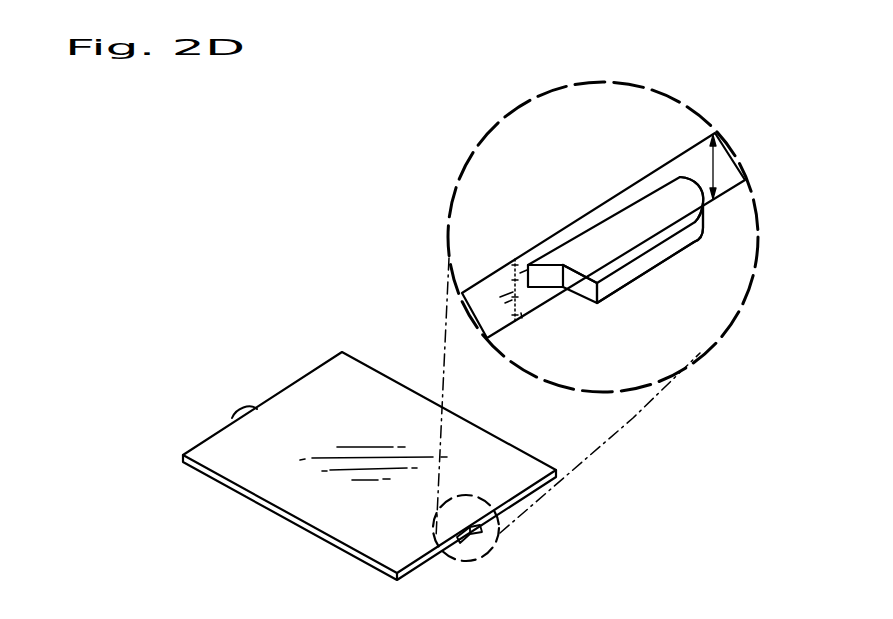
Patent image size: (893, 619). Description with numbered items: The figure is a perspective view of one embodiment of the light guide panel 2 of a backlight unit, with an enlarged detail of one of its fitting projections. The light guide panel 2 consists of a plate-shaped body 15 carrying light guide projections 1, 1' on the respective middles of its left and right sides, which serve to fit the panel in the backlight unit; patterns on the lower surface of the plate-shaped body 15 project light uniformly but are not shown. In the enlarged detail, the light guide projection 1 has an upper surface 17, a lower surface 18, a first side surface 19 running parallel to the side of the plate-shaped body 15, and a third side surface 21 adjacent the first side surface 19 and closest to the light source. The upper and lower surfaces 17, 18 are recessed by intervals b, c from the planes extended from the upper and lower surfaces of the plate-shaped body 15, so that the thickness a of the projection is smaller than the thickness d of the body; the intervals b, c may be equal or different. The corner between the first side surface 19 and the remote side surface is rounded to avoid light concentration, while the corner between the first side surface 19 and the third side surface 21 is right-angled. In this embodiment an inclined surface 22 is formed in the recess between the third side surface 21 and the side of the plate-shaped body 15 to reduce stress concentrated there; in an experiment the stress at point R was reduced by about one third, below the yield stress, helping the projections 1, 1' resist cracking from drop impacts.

The light guide projection 1 is at (466, 555).
The light guide projection 1' is at (221, 405).
The light guide panel 2 is at (295, 381).
The plate-shaped body 15 is at (310, 491).
The upper surface 17 is at (607, 230).
The lower surface 18 is at (626, 287).
The first side surface 19 is at (668, 256).
The third side surface 21 is at (578, 284).
The inclined surface 22 is at (547, 273).
The thickness of the light guide projection a is at (499, 299).
The interval b is at (515, 262).
The interval c is at (521, 313).
The point R is at (528, 262).
The thickness of the plate-shaped body d is at (719, 167).